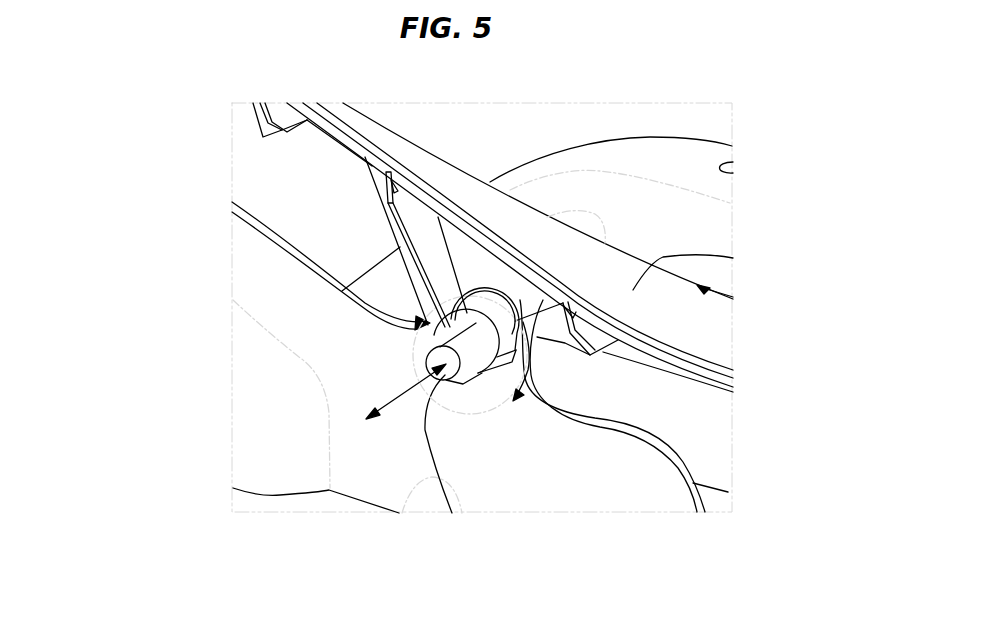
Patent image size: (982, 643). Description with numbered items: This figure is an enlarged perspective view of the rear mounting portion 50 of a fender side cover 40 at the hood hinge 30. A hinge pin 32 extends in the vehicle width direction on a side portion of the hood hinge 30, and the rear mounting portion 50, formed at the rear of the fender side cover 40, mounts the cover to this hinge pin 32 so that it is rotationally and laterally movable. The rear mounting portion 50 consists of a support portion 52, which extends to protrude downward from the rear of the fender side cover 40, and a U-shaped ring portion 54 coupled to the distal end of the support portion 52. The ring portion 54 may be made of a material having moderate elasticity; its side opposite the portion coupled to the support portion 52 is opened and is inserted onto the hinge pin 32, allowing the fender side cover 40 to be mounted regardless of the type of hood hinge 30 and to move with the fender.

The hood hinge 30 is at (593, 470).
The hinge pin 32 is at (452, 513).
The fender side cover 40 is at (733, 258).
The rear mounting portion 50 is at (123, 289).
The support portion 52 is at (425, 232).
The ring portion 54 is at (445, 337).